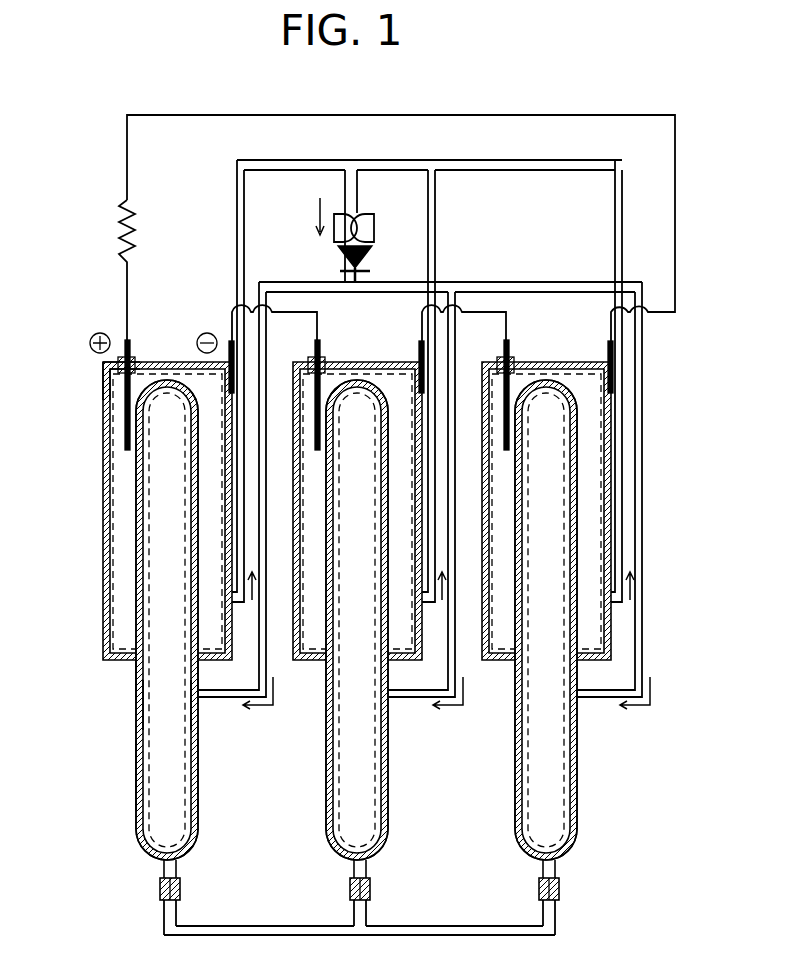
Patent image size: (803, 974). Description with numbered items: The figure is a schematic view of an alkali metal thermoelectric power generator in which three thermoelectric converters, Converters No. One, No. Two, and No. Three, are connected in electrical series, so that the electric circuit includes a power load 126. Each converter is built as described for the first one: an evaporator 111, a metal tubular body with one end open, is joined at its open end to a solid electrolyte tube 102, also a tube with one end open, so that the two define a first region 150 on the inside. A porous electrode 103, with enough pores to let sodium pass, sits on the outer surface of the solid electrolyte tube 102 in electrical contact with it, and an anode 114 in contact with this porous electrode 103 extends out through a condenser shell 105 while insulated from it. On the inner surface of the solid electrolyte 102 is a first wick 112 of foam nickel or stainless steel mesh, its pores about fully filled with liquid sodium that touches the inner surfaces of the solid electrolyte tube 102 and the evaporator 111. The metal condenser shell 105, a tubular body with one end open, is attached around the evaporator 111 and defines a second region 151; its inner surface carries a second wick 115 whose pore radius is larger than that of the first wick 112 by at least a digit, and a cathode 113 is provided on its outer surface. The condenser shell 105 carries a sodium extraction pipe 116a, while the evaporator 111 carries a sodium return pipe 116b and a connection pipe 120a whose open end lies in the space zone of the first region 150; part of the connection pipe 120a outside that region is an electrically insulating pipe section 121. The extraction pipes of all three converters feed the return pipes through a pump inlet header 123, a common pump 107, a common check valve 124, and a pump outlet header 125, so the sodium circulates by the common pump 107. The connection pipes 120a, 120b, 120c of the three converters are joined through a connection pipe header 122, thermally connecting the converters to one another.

The solid electrolyte tube 102 is at (142, 612).
The porous electrode 103 is at (140, 530).
The condenser shell 105 is at (103, 430).
The pump 107 is at (373, 228).
The evaporator 111 is at (142, 775).
The first wick 112 is at (140, 678).
The cathode 113 is at (232, 340).
The anode 114 is at (123, 340).
The second wick 115 is at (113, 490).
The sodium extraction pipe 116a is at (237, 268).
The sodium return pipe 116b is at (220, 700).
The connection pipe 120a is at (166, 920).
The connection pipe 120b is at (370, 910).
The connection pipe 120c is at (562, 913).
The electrically insulating pipe section 121 is at (183, 890).
The connection pipe header 122 is at (520, 935).
The pump inlet header 123 is at (267, 162).
The check valve 124 is at (365, 259).
The pump outlet header 125 is at (295, 285).
The power load 126 is at (118, 232).
The first region 150 is at (165, 705).
The second region 151 is at (108, 370).